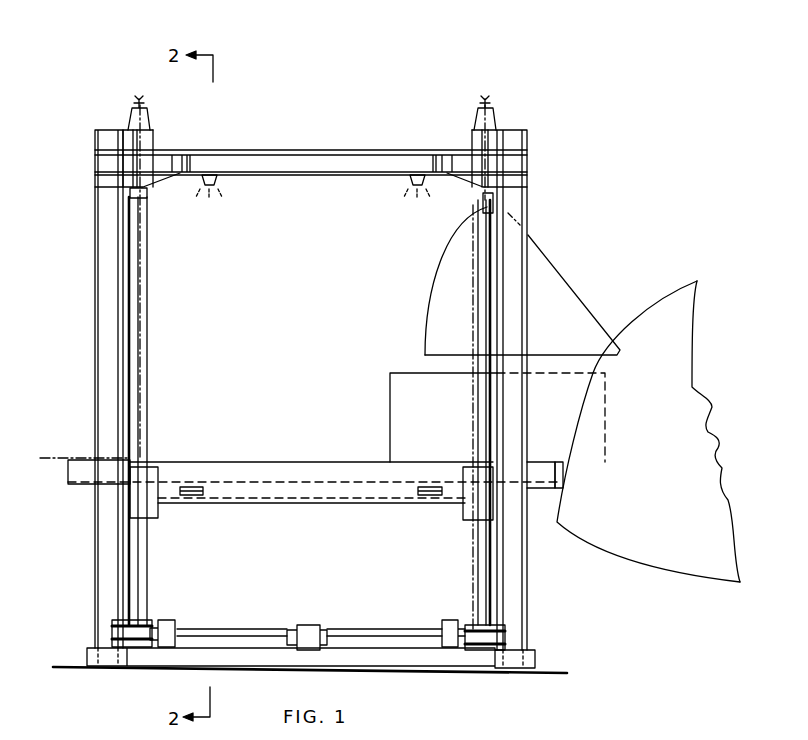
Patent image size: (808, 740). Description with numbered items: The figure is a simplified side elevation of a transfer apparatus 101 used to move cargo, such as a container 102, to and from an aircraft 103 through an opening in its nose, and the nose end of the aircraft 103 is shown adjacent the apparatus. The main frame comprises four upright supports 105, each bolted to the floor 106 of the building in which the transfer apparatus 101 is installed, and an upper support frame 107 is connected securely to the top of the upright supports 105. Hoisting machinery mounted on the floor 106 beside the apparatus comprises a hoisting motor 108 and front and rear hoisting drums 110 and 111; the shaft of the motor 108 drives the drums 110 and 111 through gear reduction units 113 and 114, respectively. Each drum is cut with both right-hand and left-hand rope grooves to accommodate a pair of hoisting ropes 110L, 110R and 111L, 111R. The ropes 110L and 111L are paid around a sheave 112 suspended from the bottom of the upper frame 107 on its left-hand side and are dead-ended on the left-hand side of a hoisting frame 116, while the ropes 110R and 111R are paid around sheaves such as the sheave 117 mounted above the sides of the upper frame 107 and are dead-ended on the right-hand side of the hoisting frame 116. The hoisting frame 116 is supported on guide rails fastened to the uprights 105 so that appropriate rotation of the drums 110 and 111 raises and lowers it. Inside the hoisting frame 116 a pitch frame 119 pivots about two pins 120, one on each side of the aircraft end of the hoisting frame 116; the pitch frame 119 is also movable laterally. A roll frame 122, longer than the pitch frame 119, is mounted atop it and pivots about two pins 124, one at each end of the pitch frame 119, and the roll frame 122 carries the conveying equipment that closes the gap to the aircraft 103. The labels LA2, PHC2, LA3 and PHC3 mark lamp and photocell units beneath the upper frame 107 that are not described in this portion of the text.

The transfer apparatus 101 is at (277, 152).
The container 102 is at (390, 390).
The aircraft 103 is at (683, 280).
The upright supports 105 is at (97, 211).
The floor 106 is at (550, 672).
The upper support frame 107 is at (333, 165).
The hoisting motor 108 is at (310, 627).
The front hoisting drum 110 is at (483, 633).
The hoisting rope 110L is at (472, 547).
The hoisting rope 110R is at (488, 143).
The rear hoisting drum 111 is at (127, 632).
The hoisting rope 111L is at (125, 540).
The hoisting rope 111R is at (150, 567).
The sheave 112 is at (138, 202).
The gear reduction unit 113 is at (453, 625).
The gear reduction unit 114 is at (168, 627).
The hoisting frame 116 is at (303, 505).
The sheave 117 is at (152, 95).
The pitch frame 119 is at (262, 492).
The pins 120 is at (458, 507).
The roll frame 122 is at (553, 475).
The pins 124 is at (197, 487).
The lamp assembly 2 LA2 is at (262, 198).
The photocell 2 PHC2 is at (217, 215).
The lamp assembly 3 LA3 is at (407, 182).
The photocell 3 PHC3 is at (392, 215).